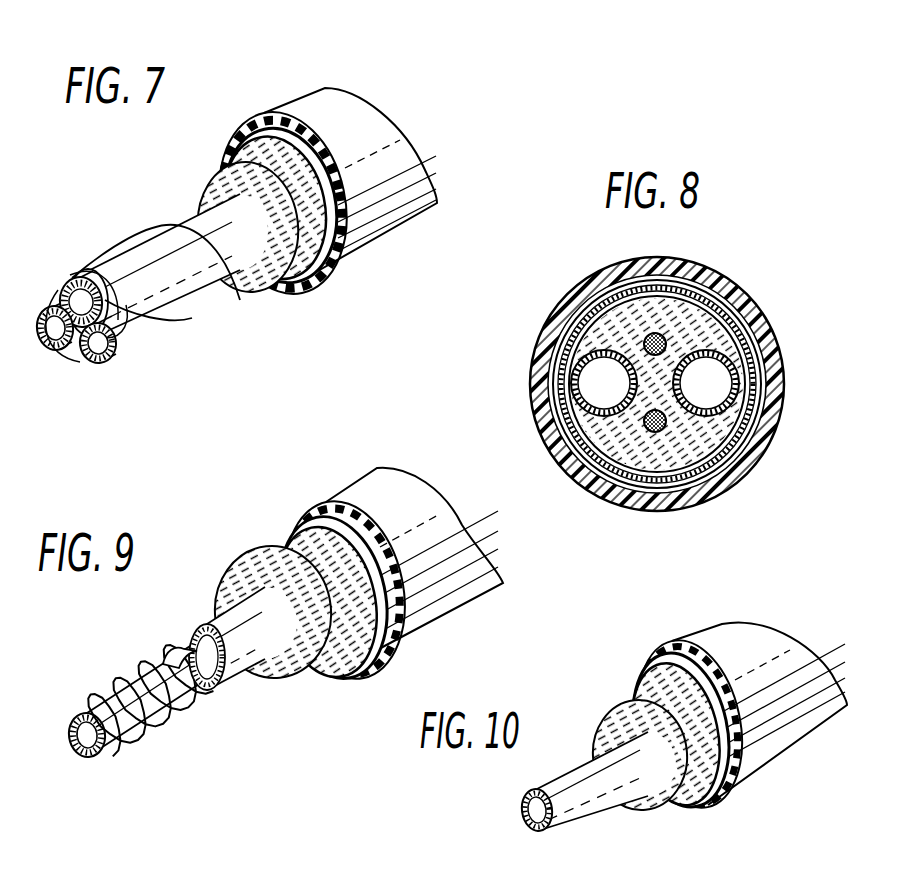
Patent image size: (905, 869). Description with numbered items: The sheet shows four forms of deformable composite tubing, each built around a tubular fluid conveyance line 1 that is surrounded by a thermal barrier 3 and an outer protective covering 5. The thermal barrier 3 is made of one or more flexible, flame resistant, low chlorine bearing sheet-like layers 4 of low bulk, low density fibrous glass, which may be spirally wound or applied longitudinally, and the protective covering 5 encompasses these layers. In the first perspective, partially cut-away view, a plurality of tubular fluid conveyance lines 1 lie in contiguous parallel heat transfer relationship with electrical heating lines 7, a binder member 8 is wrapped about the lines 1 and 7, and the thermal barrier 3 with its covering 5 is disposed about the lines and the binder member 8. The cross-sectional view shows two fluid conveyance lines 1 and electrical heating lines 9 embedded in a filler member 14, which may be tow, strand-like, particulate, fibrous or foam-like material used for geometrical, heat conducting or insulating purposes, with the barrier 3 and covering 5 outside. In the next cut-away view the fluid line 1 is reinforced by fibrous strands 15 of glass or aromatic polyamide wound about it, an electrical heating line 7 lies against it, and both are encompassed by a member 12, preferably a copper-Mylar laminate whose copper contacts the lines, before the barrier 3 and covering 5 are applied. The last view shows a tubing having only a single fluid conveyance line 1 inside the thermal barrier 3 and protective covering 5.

In FIG. 7, the tubular fluid conveyance line 1 is at (80, 283).
In FIG. 8, the tubular fluid conveyance line 1 is at (612, 398).
In FIG. 9, the tubular fluid conveyance line 1 is at (80, 752).
In FIG. 10, the tubular fluid conveyance line 1 is at (545, 786).
In FIG. 7, the thermal barrier 3 is at (220, 160).
In FIG. 9, the thermal barrier 3 is at (262, 556).
In FIG. 10, the thermal barrier 3 is at (602, 730).
In FIG. 8, the sheet-like layers 4 is at (764, 352).
In FIG. 7, the protective covering 5 is at (360, 118).
In FIG. 8, the protective covering 5 is at (745, 306).
In FIG. 9, the protective covering 5 is at (412, 492).
In FIG. 10, the protective covering 5 is at (693, 641).
In FIG. 7, the electrical heating line 7 is at (55, 300).
In FIG. 9, the electrical heating line 7 is at (180, 650).
In FIG. 7, the binder member 8 is at (172, 228).
In FIG. 8, the electrical heating line 9 is at (647, 334).
In FIG. 9, the member 12 is at (220, 622).
In FIG. 8, the filler member 14 is at (704, 270).
In FIG. 9, the fibrous strands 15 is at (146, 722).